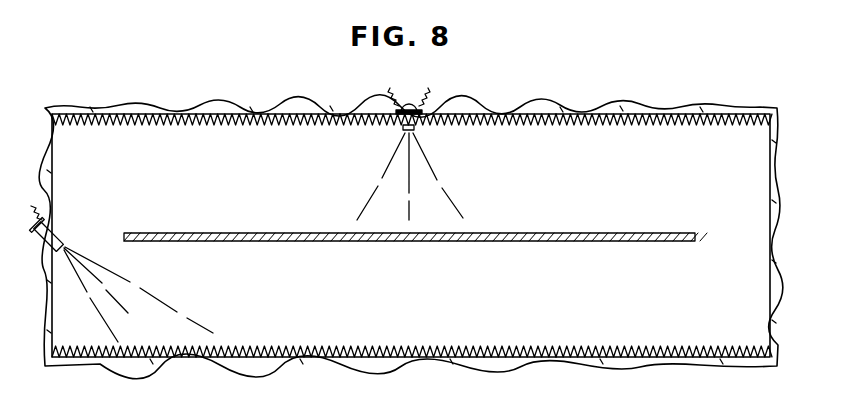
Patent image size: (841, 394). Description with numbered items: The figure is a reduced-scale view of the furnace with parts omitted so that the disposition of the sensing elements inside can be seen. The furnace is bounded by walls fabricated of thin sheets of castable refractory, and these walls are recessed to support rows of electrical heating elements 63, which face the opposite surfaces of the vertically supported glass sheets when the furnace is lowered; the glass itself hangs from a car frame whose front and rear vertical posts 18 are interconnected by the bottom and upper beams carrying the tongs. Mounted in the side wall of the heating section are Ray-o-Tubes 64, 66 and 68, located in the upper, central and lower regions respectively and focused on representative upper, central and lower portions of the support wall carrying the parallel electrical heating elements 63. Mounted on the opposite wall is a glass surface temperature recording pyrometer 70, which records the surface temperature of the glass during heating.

The vertical post 18 is at (217, 233).
The electrical heating element 63 is at (742, 128).
The Ray-o-Tube 64 is at (121, 257).
The Ray-o-Tube 66 is at (121, 257).
The Ray-o-Tube 68 is at (121, 274).
The glass surface temperature recording pyrometer 70 is at (416, 105).